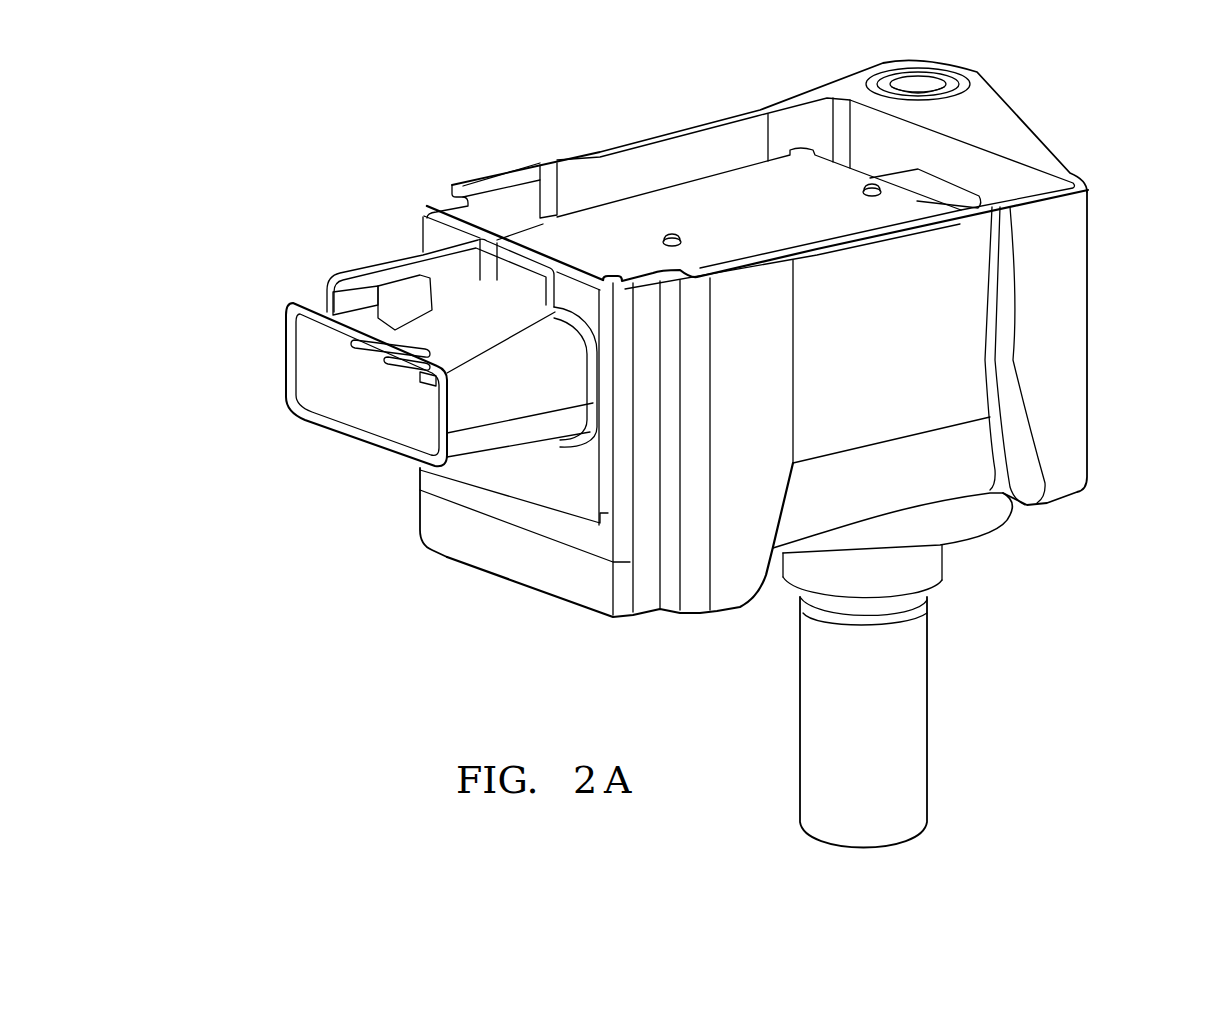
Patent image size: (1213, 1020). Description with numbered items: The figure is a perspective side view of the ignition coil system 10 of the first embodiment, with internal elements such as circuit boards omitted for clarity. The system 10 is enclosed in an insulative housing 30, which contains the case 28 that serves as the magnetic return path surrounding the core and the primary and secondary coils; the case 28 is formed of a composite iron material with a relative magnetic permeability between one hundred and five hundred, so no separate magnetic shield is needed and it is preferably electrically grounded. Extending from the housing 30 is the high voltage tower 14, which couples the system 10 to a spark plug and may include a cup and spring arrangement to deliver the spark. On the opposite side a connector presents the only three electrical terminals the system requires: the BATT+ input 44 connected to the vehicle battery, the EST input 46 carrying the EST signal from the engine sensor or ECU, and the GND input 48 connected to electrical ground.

The ignition coil system 10 is at (623, 89).
The high voltage tower 14 is at (918, 708).
The case 28 is at (633, 203).
The insulative housing 30 is at (1065, 268).
The BATT+ input 44 is at (430, 378).
The EST input 46 is at (323, 312).
The GND input 48 is at (427, 376).